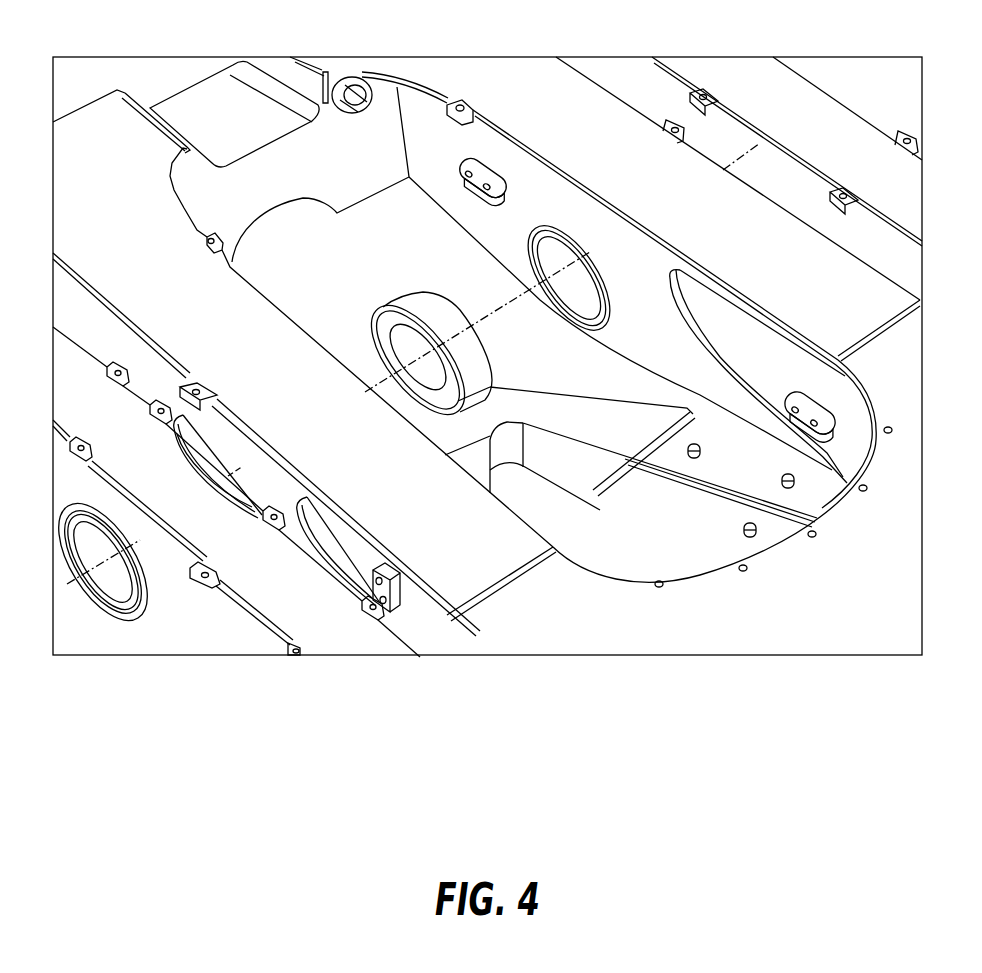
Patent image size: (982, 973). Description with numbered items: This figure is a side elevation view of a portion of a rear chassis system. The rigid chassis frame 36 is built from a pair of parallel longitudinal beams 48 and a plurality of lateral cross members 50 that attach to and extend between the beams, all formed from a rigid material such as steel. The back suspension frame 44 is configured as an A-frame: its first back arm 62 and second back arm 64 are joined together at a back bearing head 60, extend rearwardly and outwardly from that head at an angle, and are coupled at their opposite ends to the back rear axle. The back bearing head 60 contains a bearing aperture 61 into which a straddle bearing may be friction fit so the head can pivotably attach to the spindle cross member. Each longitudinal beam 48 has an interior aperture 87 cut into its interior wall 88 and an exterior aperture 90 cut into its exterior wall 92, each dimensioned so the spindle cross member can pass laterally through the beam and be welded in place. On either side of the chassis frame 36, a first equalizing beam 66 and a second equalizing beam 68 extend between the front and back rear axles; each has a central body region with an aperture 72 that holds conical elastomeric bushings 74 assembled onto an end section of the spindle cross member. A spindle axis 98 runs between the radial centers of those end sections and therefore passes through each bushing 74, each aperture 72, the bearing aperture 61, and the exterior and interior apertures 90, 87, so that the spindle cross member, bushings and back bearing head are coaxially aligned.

The chassis frame 36 is at (888, 279).
The back suspension frame 44 is at (633, 493).
The longitudinal beams 48 is at (282, 380).
The lateral cross members 50 is at (110, 118).
The back bearing head 60 is at (410, 307).
The bearing aperture 61 is at (398, 338).
The first back arm 62 is at (693, 517).
The second back arm 64 is at (473, 460).
The first equalizing beam 66 is at (717, 78).
The second equalizing beam 68 is at (323, 630).
The aperture 72 is at (150, 592).
The bushing 74 is at (110, 607).
The interior aperture 87 is at (600, 280).
The interior wall 88 is at (417, 113).
The exterior aperture 90 is at (240, 483).
The exterior wall 92 is at (73, 317).
The spindle axis 98 is at (848, 90).